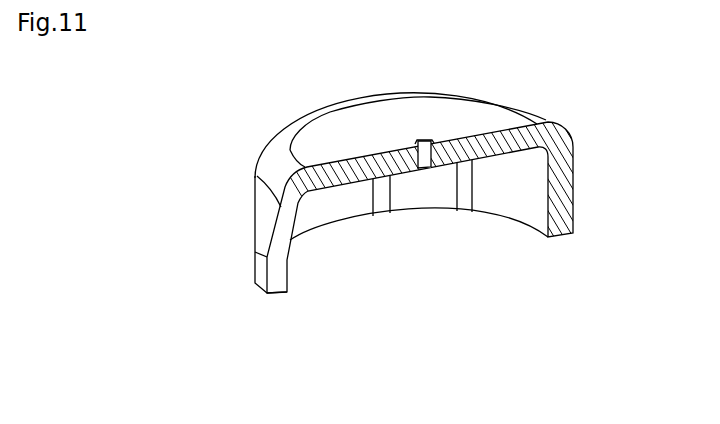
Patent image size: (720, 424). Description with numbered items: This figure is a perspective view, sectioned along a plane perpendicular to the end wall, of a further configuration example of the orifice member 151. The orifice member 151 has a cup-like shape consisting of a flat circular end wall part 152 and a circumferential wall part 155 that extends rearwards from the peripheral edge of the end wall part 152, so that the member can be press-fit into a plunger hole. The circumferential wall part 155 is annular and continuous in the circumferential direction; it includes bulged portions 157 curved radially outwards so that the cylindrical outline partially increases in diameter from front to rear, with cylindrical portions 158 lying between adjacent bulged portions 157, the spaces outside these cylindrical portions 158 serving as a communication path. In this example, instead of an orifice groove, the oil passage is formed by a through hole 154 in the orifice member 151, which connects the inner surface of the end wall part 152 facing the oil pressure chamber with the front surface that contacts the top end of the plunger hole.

The orifice member 151 is at (562, 122).
The end wall part 152 is at (330, 140).
The through hole 154 is at (423, 143).
The circumferential wall part 155 is at (595, 338).
The bulged portions 157 is at (281, 289).
The cylindrical portions 158 is at (337, 213).